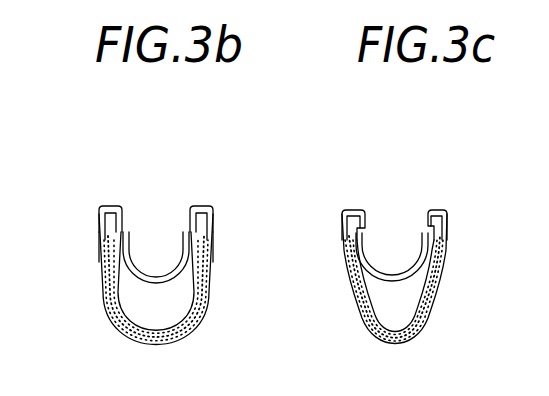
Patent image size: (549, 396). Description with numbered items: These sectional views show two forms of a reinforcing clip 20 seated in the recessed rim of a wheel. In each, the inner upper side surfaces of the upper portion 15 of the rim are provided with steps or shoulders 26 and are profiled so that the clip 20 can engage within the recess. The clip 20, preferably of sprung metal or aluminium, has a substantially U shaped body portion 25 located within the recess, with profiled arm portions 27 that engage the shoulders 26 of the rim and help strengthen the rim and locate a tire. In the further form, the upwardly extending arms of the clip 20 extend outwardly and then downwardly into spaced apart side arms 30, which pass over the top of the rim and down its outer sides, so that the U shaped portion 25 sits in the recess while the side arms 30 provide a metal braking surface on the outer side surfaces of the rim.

In FIG. 3b, the upper portion 15 is at (210, 323).
In FIG. 3c, the upper portion 15 is at (303, 282).
In FIG. 3b, the reinforcing clip 20 is at (157, 207).
In FIG. 3c, the reinforcing clip 20 is at (398, 185).
In FIG. 3b, the U shaped body portion 25 is at (156, 257).
In FIG. 3c, the U shaped body portion 25 is at (407, 285).
In FIG. 3b, the shoulders 26 is at (105, 262).
In FIG. 3c, the shoulders 26 is at (435, 252).
In FIG. 3b, the profiled arm portions 27 is at (123, 206).
In FIG. 3c, the profiled arm portions 27 is at (432, 223).
In FIG. 3b, the side arms 30 is at (99, 258).